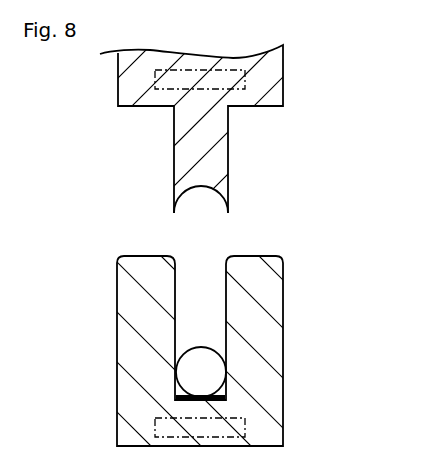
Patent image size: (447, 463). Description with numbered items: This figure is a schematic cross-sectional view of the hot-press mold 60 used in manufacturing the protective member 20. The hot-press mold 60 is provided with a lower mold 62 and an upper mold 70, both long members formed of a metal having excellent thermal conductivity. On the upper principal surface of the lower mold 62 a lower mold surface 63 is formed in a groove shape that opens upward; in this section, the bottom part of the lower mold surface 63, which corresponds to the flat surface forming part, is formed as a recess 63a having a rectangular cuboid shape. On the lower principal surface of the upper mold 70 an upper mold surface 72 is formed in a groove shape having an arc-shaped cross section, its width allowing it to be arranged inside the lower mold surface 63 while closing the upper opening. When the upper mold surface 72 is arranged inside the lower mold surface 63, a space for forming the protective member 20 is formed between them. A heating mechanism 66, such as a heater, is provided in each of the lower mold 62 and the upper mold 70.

The hot-press mold 60 is at (338, 222).
The upper mold 70 is at (284, 98).
The upper mold surface 72 is at (201, 188).
The heating mechanism 66 is at (245, 83).
The lower mold 62 is at (284, 377).
The lower mold surface 63 is at (182, 398).
The recess 63a is at (212, 398).
The protective member 20 is at (206, 347).